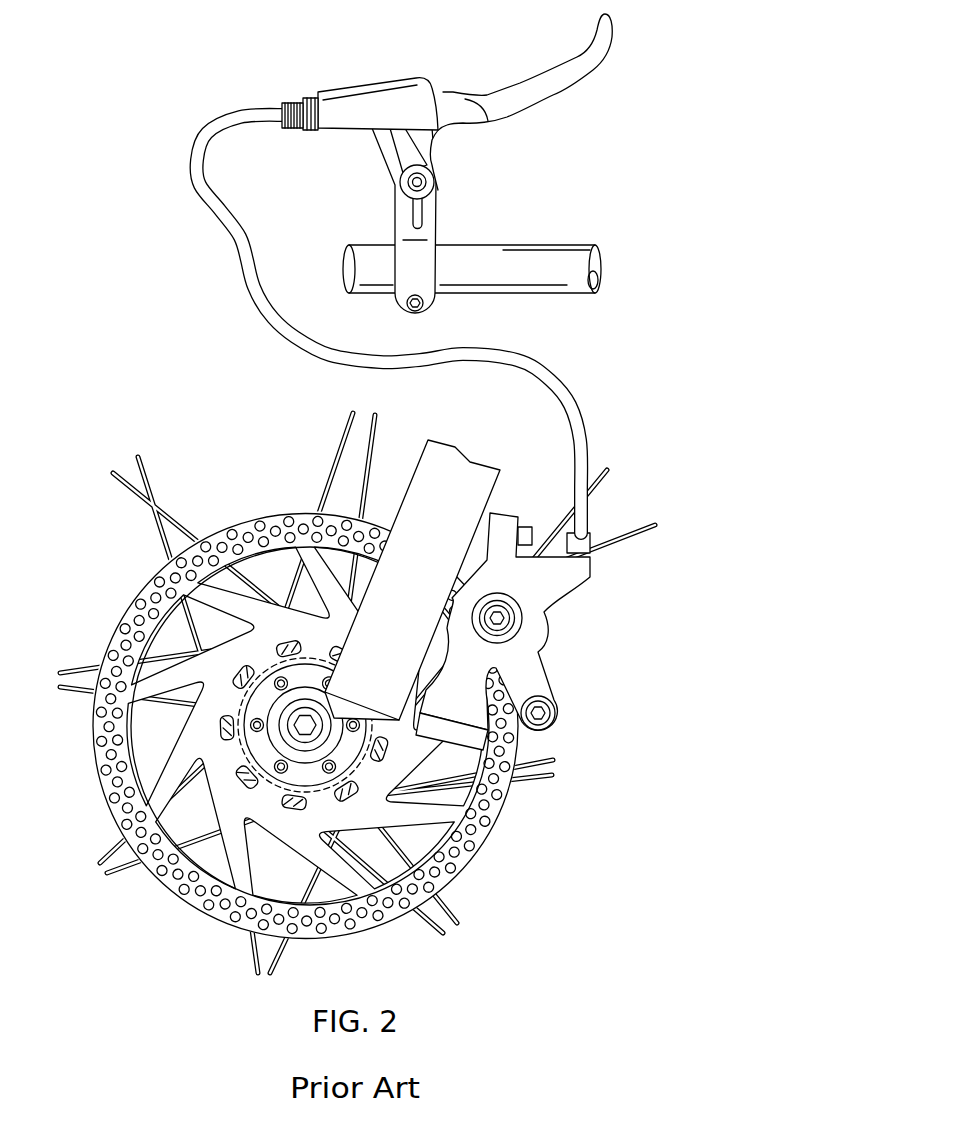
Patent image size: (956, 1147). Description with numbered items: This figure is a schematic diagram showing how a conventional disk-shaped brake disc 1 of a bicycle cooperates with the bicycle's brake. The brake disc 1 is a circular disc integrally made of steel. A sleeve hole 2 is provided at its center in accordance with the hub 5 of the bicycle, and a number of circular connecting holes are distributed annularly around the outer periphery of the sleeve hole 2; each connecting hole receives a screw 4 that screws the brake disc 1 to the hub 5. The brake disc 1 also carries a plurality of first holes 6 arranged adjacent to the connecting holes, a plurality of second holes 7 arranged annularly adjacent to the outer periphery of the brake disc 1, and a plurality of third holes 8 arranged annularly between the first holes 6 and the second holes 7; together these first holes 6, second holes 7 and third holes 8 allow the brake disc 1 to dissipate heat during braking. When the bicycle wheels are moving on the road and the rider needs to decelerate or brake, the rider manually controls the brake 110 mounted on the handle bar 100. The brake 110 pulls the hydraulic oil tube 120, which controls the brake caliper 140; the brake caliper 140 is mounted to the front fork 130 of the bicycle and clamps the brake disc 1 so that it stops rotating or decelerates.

The brake disc 1 is at (179, 907).
The sleeve hole 2 is at (137, 785).
The screw 4 is at (252, 722).
The hub 5 is at (288, 647).
The first holes 6 is at (397, 753).
The second holes 7 is at (457, 873).
The third holes 8 is at (465, 848).
The handle bar 100 is at (500, 260).
The brake 110 is at (550, 85).
The hydraulic oil tube 120 is at (233, 255).
The front fork 130 is at (453, 463).
The brake caliper 140 is at (528, 627).